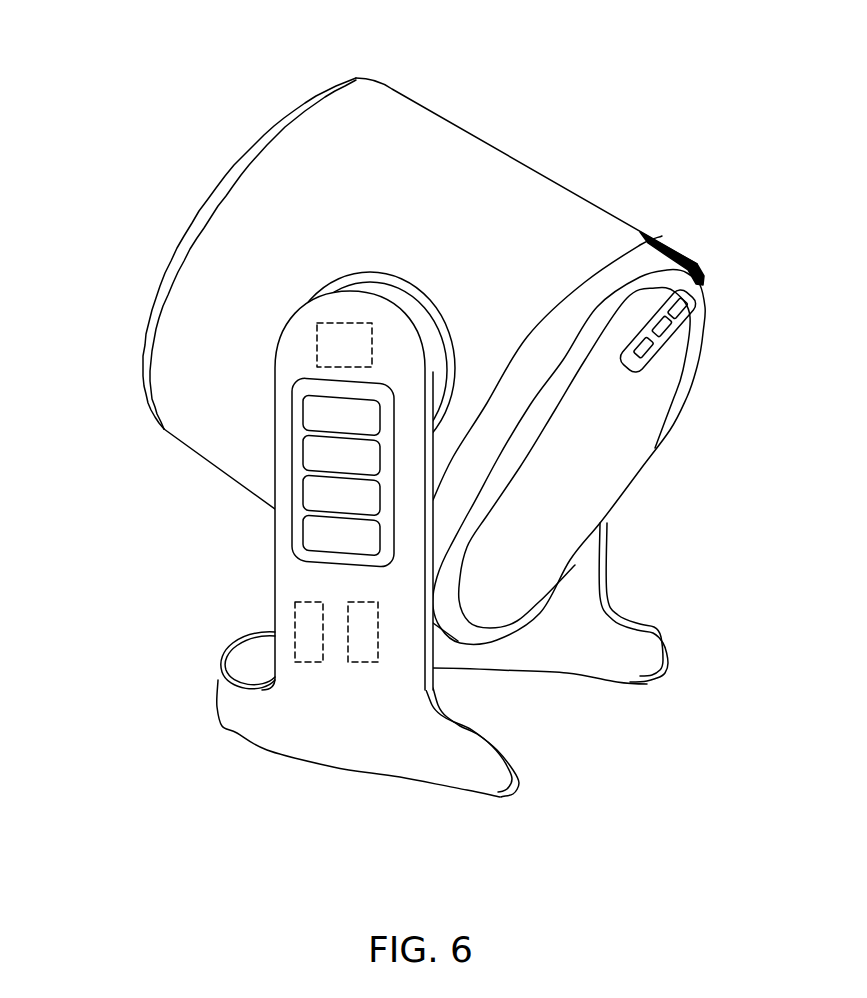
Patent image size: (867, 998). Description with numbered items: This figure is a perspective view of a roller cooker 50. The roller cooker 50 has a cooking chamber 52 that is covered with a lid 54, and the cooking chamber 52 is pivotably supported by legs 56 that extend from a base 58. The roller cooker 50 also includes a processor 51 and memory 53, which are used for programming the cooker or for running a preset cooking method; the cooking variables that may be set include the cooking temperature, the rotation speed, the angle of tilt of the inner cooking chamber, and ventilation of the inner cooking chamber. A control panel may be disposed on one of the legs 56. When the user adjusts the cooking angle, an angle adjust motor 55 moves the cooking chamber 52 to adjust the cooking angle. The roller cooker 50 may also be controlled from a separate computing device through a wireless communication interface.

The roller cooker 50 is at (626, 138).
The processor 51 is at (295, 662).
The cooking chamber 52 is at (483, 175).
The memory 53 is at (378, 661).
The lid 54 is at (613, 457).
The angle adjust motor 55 is at (317, 352).
The legs 56 is at (273, 547).
The base 58 is at (237, 731).